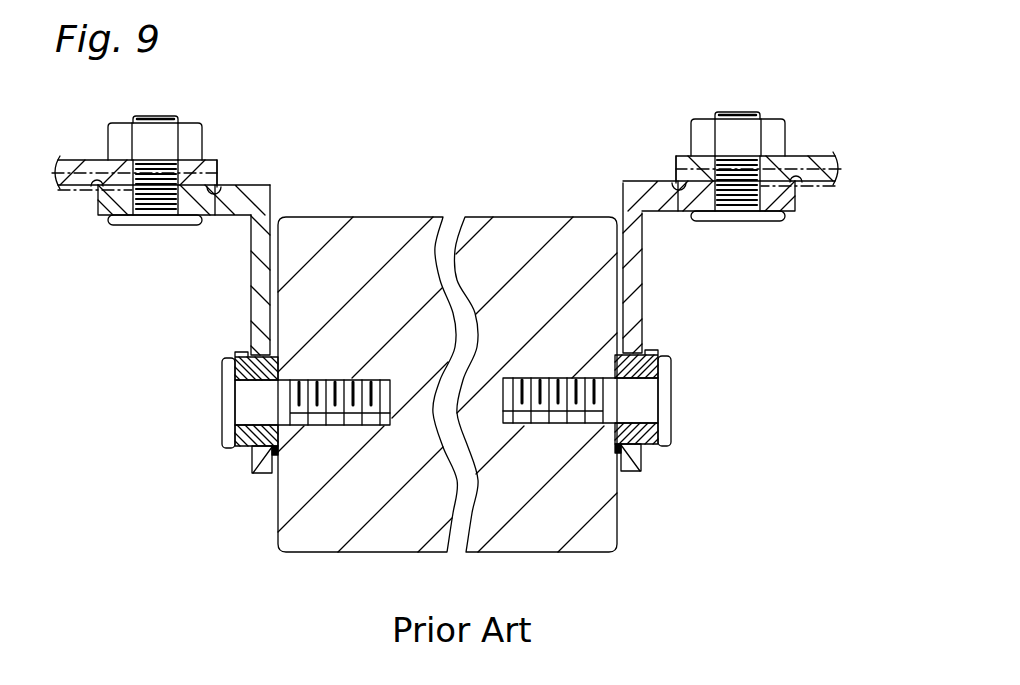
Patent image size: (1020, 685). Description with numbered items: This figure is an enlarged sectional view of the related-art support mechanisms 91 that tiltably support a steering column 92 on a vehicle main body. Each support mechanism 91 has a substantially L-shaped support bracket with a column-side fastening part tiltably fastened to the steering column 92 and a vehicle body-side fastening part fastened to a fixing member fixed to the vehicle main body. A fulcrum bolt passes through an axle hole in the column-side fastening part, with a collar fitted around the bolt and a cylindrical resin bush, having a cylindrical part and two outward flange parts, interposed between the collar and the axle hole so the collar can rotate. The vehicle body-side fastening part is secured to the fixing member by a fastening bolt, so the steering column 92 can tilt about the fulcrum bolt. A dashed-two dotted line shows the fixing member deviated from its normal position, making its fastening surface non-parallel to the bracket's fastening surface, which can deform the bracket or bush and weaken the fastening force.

The support mechanism 91 is at (308, 114).
The steering column 92 is at (378, 228).